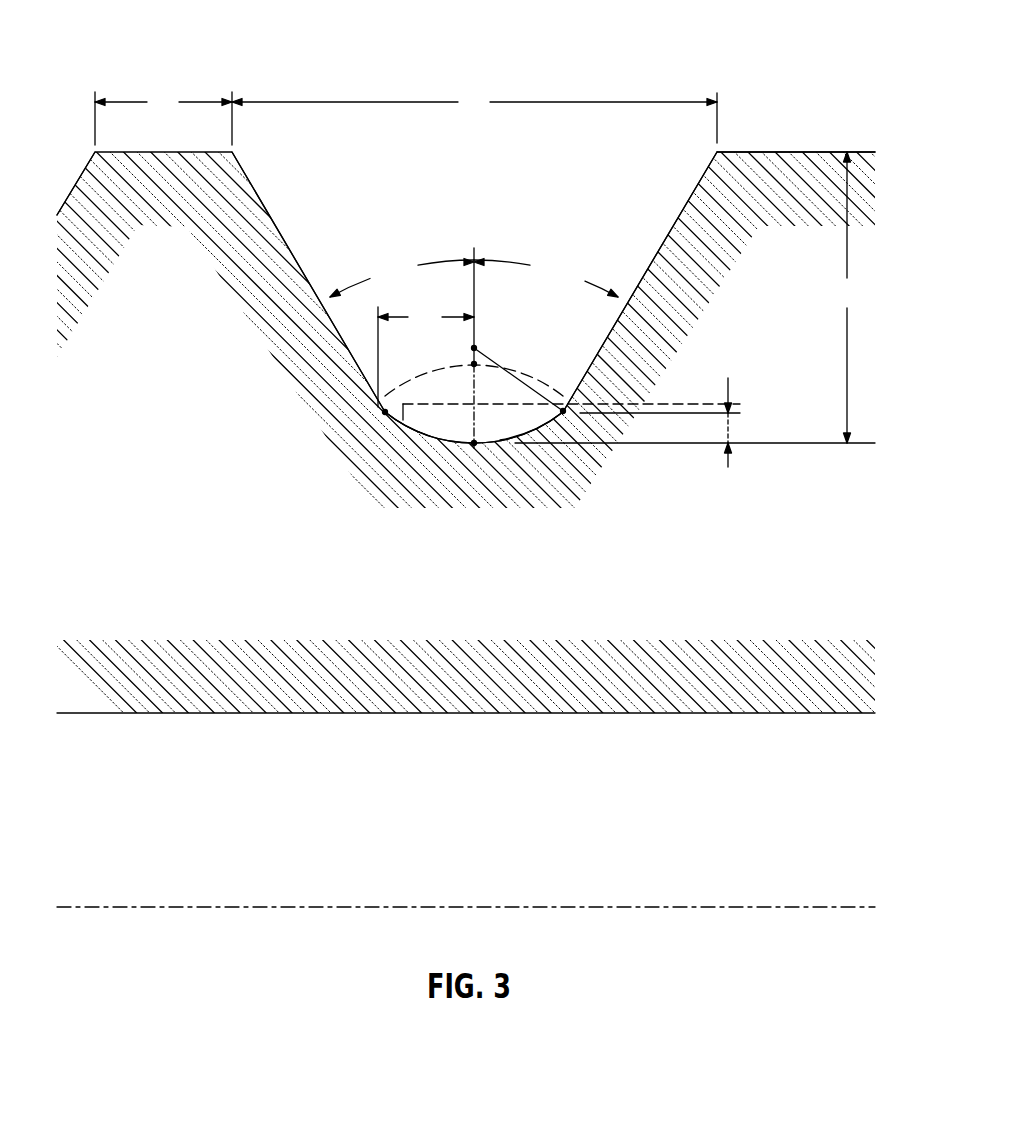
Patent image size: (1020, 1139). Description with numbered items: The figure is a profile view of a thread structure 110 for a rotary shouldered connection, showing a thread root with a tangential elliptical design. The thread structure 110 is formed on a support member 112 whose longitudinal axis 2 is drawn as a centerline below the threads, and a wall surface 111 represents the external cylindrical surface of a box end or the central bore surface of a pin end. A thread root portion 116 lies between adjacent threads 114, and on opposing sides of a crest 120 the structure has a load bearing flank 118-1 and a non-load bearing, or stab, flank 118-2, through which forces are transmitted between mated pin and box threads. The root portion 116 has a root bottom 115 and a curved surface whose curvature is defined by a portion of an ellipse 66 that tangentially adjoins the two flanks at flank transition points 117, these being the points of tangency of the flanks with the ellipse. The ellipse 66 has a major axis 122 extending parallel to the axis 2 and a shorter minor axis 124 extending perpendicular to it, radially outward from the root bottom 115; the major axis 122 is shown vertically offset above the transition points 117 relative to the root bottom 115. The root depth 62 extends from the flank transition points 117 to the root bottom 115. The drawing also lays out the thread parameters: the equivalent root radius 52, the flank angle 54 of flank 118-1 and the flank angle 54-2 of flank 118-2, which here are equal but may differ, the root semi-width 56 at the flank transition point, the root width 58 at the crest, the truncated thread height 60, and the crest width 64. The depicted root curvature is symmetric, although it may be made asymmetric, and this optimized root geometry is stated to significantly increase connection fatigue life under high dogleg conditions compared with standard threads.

The longitudinal axis 2 is at (640, 907).
The equivalent root radius 52 is at (486, 356).
The flank angle 54 is at (402, 277).
The flank angle of flank 118-2 54-2 is at (546, 277).
The root semi-width at flank transition point 56 is at (426, 354).
The root width at crest 58 is at (474, 114).
The truncated thread height 60 is at (847, 297).
The root depth 62 is at (728, 406).
The crest width 64 is at (163, 115).
The ellipse 66 is at (548, 383).
The thread structure 110 is at (510, 278).
The wall surface 111 is at (262, 714).
The support member 112 is at (456, 691).
The threads 114 is at (142, 199).
The root bottom 115 is at (474, 443).
The thread root portion 116 is at (540, 424).
The flank transition points 117 is at (385, 412).
The load bearing flank 118-1 is at (268, 213).
The non-load bearing flank 118-2 is at (74, 188).
The crest 120 is at (779, 152).
The major axis 122 is at (401, 424).
The minor axis 124 is at (480, 420).